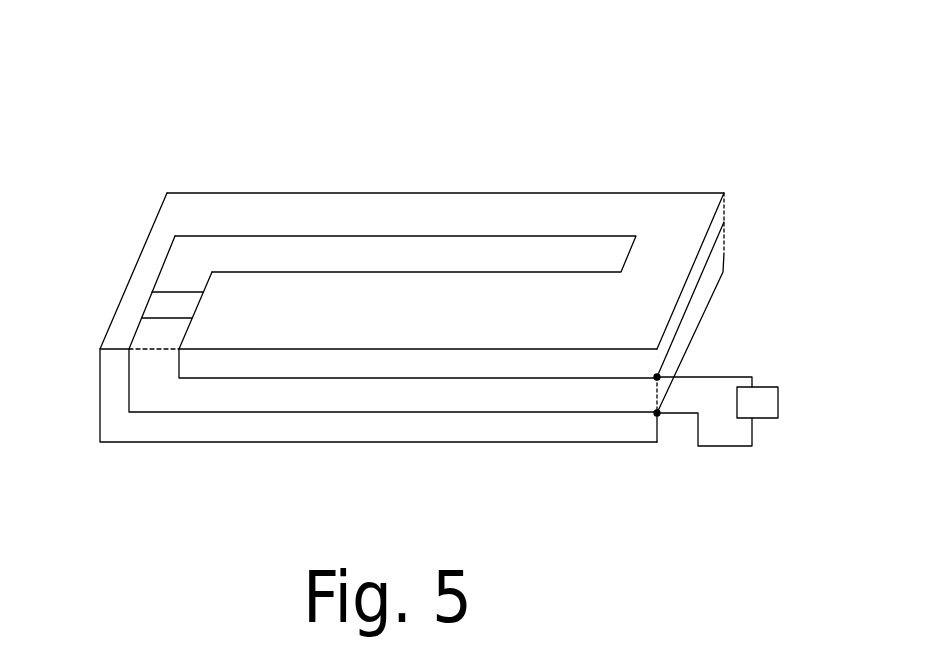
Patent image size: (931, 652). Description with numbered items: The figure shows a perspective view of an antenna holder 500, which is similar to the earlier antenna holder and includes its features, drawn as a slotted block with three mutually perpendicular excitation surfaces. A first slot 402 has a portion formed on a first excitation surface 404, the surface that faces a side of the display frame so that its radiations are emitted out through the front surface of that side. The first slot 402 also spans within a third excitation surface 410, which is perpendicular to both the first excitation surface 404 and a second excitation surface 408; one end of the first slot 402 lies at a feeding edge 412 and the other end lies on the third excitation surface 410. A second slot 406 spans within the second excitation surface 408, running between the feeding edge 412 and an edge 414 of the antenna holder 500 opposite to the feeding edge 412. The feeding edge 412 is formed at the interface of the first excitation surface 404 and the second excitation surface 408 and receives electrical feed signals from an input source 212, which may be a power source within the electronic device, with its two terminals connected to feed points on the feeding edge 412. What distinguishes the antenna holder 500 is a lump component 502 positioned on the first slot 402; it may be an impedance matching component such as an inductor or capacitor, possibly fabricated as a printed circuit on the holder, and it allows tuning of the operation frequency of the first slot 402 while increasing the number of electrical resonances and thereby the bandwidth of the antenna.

The antenna holder 500 is at (364, 86).
The lump component 502 is at (170, 303).
The first slot 402 is at (350, 390).
The first excitation surface 404 is at (182, 420).
The second slot 406 is at (673, 350).
The second excitation surface 408 is at (673, 315).
The third excitation surface 410 is at (667, 218).
The feeding edge 412 is at (658, 420).
The edge 414 is at (725, 217).
The input source 212 is at (757, 397).